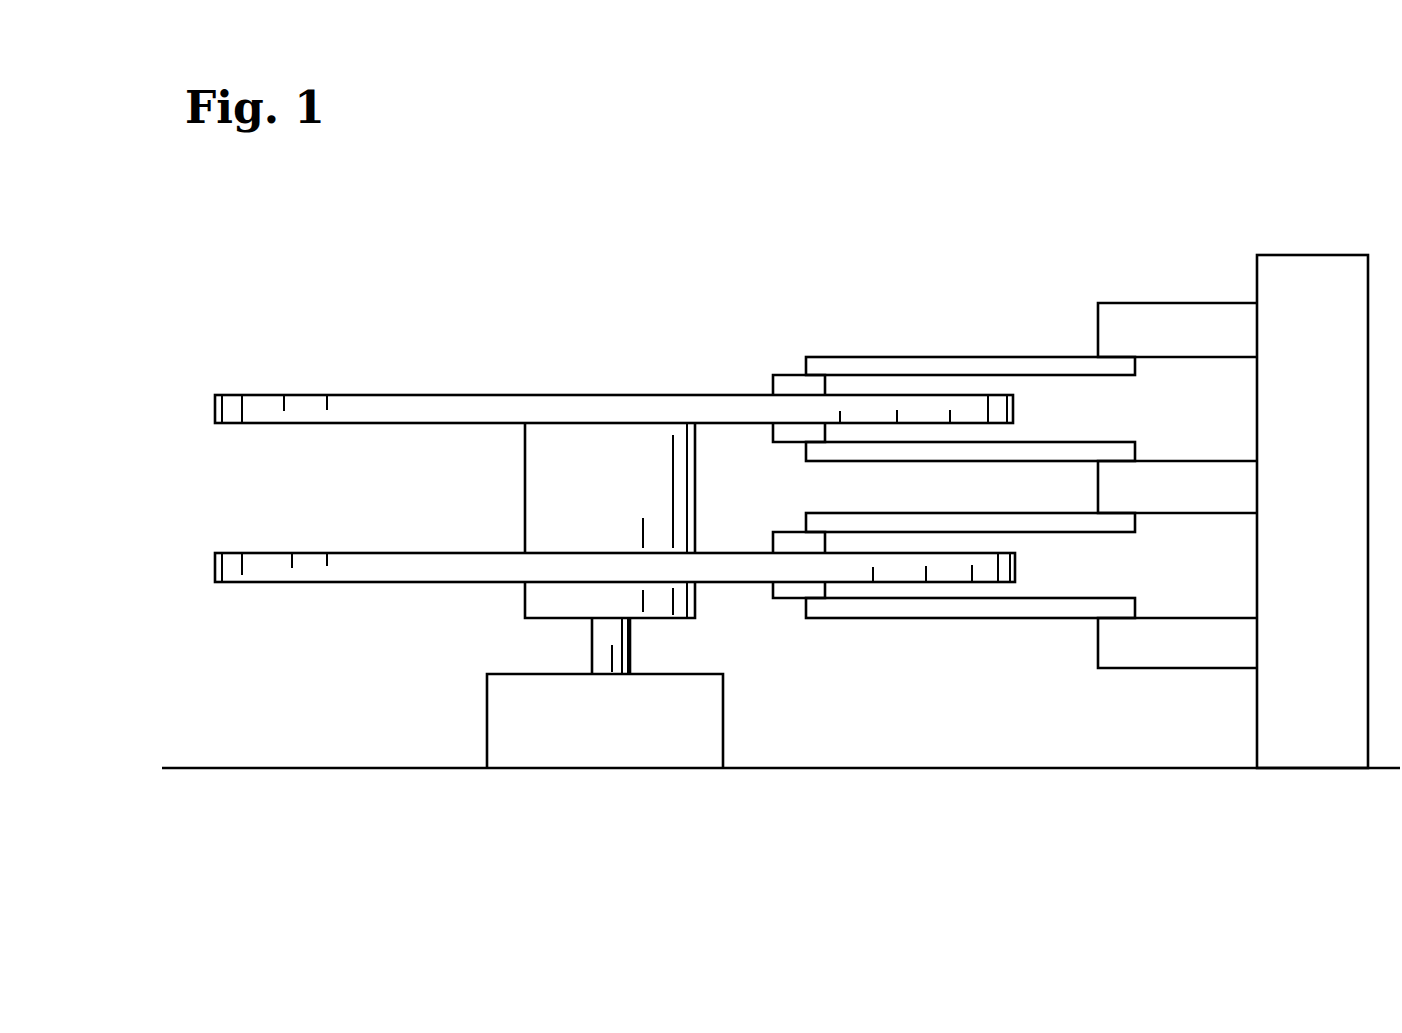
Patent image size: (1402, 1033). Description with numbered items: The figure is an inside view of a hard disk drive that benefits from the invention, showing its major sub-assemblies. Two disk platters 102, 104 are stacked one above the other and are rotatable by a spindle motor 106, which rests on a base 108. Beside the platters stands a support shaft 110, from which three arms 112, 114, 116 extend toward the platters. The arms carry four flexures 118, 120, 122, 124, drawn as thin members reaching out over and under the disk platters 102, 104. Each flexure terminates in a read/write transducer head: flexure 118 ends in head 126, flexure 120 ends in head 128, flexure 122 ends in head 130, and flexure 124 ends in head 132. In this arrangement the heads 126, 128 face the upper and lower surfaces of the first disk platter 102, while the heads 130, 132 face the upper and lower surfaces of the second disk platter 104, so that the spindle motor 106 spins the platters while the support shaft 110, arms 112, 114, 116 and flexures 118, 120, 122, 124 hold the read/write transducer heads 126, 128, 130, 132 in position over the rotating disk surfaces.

The disk platter 102 is at (198, 408).
The disk platter 104 is at (200, 572).
The spindle motor 106 is at (630, 527).
The base 108 is at (303, 782).
The support shaft 110 is at (1336, 504).
The arm 112 is at (1205, 361).
The arm 114 is at (1197, 524).
The arm 116 is at (1195, 672).
The flexure 118 is at (990, 355).
The flexure 120 is at (970, 468).
The flexure 122 is at (970, 505).
The flexure 124 is at (980, 621).
The read/write transducer head 126 is at (771, 374).
The read/write transducer head 128 is at (771, 445).
The read/write transducer head 130 is at (771, 531).
The read/write transducer head 132 is at (771, 601).